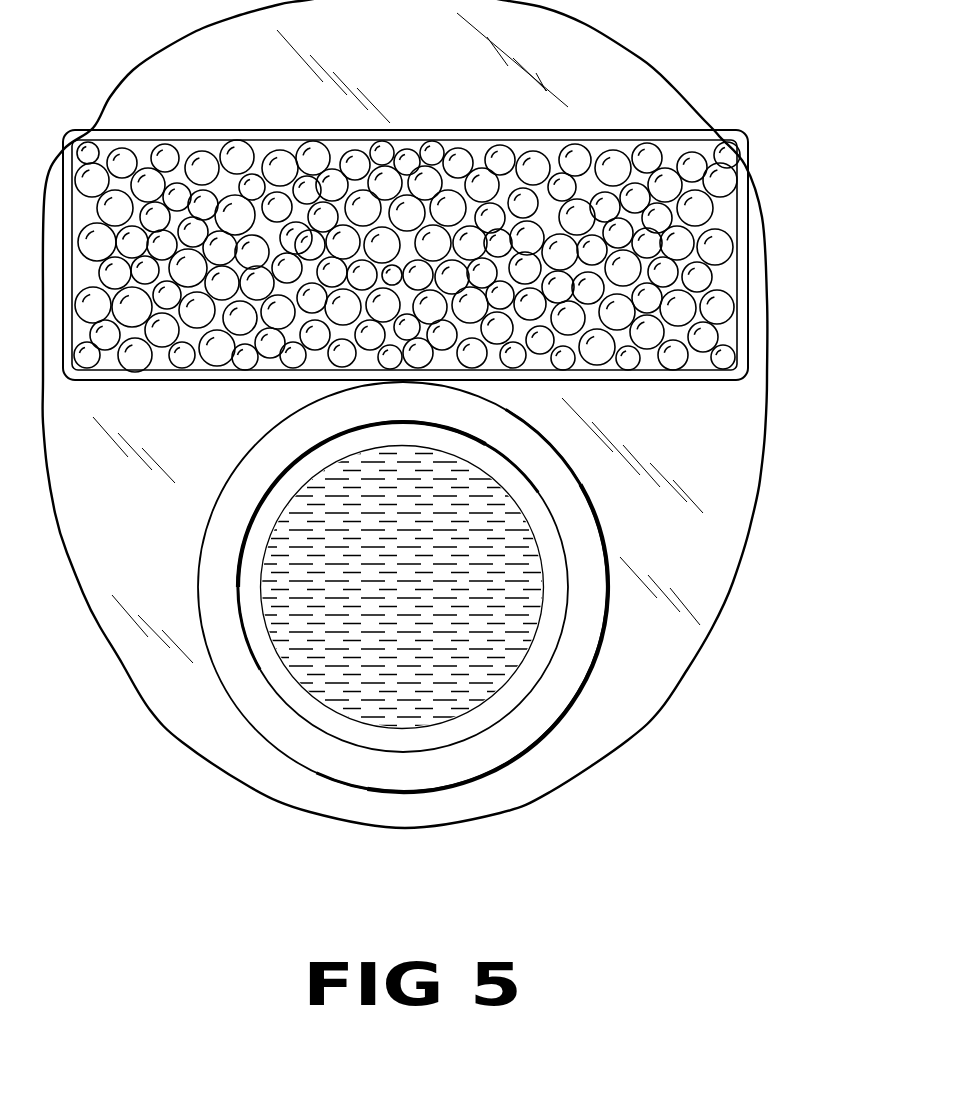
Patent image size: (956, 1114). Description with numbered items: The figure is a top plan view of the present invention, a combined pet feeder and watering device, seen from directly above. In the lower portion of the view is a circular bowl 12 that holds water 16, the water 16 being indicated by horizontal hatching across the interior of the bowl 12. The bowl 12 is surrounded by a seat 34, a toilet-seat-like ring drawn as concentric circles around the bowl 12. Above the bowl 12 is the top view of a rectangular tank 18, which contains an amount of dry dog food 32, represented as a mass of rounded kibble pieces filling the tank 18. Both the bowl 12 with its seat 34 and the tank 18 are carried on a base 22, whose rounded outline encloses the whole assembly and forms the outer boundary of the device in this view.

The bowl 12 is at (548, 533).
The water 16 is at (520, 625).
The tank 18 is at (743, 152).
The base 22 is at (745, 410).
The dry dog food 32 is at (718, 250).
The seat 34 is at (542, 698).